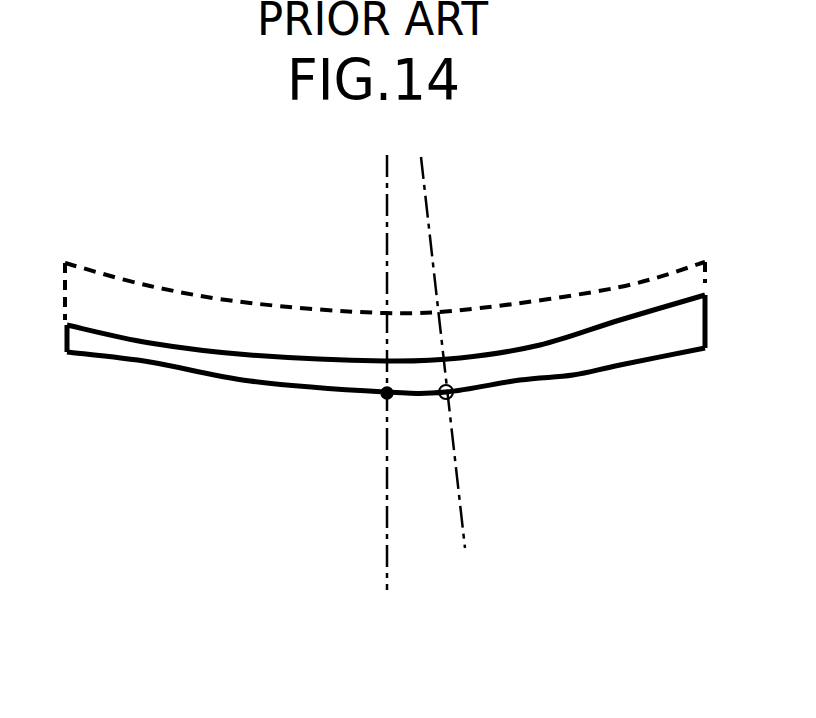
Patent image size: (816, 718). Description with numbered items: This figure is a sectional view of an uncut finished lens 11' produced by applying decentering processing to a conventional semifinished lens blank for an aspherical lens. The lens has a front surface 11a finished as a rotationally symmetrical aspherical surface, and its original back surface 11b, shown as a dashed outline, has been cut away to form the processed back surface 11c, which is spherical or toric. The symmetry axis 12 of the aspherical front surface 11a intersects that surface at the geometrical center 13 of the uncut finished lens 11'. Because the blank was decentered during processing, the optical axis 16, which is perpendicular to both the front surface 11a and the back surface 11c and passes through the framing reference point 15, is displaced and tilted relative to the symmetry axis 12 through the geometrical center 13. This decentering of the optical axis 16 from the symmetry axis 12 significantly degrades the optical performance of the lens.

The symmetry axis 12 is at (386, 180).
The optical axis 16 is at (422, 168).
The uncut finished lens 11' is at (386, 350).
The front surface 11a is at (573, 377).
The back surface 11b is at (621, 283).
The back surface 11c is at (527, 343).
The geometrical center 13 is at (381, 400).
The framing reference point 15 is at (450, 403).